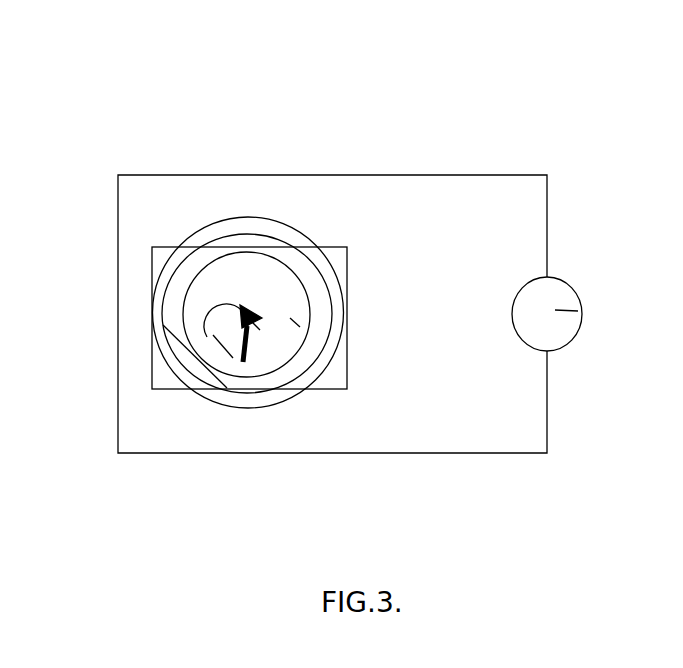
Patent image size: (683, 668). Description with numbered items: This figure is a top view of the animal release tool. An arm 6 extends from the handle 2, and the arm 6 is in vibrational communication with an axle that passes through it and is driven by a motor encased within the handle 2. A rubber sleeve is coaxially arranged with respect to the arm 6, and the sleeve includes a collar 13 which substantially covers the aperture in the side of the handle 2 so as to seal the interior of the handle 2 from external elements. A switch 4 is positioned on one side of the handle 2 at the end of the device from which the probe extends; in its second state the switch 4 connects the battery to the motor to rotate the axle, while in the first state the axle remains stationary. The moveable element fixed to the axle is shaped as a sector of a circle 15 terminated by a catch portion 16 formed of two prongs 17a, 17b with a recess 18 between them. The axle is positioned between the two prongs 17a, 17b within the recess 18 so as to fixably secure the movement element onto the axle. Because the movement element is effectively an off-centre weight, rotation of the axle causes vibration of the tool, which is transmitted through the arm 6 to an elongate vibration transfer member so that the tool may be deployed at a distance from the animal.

The handle 2 is at (197, 266).
The collar 13 is at (219, 221).
The prong 17a is at (240, 306).
The prong 17b is at (252, 322).
The sector of a circle 15 is at (215, 334).
The recess 18 is at (247, 310).
The catch portion 16 is at (244, 358).
The arm 6 is at (290, 318).
The switch 4 is at (578, 311).